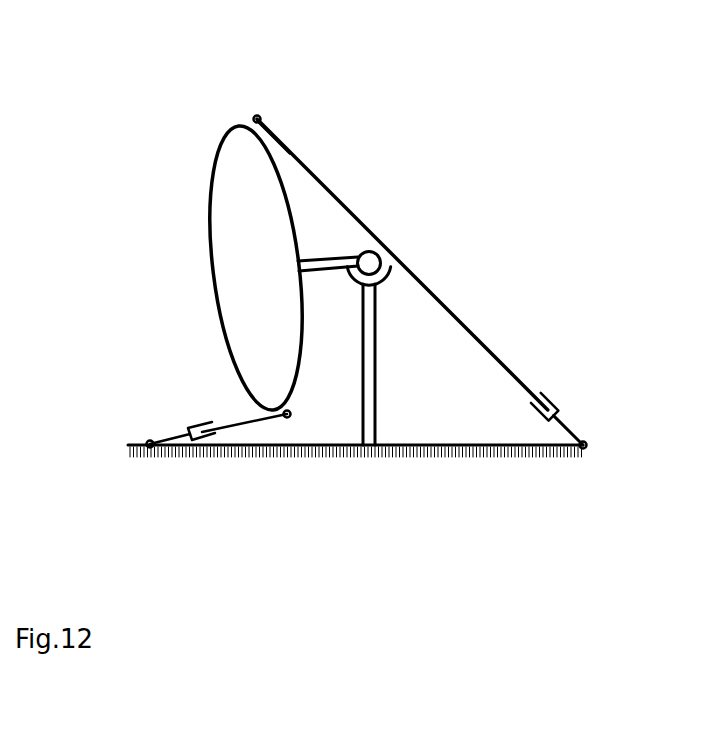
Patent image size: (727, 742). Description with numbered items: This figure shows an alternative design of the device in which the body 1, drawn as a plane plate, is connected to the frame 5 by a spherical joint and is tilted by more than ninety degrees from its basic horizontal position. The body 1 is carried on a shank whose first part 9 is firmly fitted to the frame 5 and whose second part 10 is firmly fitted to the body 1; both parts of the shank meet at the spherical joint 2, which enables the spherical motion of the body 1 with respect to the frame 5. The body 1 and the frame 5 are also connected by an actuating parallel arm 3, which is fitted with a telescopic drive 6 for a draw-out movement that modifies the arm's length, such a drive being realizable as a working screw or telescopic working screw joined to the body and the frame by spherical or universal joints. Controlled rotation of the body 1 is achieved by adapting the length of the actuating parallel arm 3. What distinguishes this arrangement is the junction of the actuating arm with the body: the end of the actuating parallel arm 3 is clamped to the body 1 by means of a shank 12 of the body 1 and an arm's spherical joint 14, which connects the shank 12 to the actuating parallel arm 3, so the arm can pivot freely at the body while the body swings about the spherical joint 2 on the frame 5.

The body 1 is at (213, 183).
The spherical joint 2 is at (370, 262).
The actuating parallel arm 3 is at (467, 322).
The frame 5 is at (275, 447).
The telescopic drive 6 is at (208, 422).
The first part of the shank 9 is at (375, 315).
The second part of the shank 10 is at (323, 258).
The shank of body 12 is at (252, 117).
The arm's spherical joint 14 is at (262, 119).